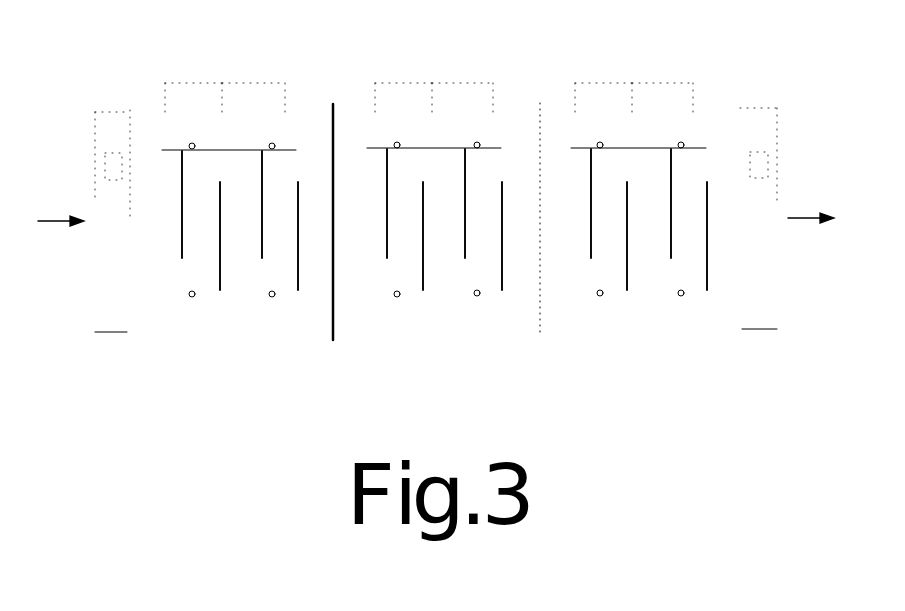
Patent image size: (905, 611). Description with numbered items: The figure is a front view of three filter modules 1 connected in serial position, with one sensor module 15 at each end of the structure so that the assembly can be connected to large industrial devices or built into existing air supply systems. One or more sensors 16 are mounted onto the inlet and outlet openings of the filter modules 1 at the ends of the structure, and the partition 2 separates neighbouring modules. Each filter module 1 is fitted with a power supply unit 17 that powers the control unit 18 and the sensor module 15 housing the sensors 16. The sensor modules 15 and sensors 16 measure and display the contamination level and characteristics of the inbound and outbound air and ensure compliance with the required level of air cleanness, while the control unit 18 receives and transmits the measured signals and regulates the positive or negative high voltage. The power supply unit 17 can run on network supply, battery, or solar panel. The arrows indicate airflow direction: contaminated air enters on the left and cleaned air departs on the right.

The filter module 1 is at (233, 316).
The partition 2 is at (547, 321).
The sensor module 15 is at (117, 317).
The sensor 16 is at (112, 258).
The power supply unit 17 is at (193, 94).
The control unit 18 is at (258, 95).